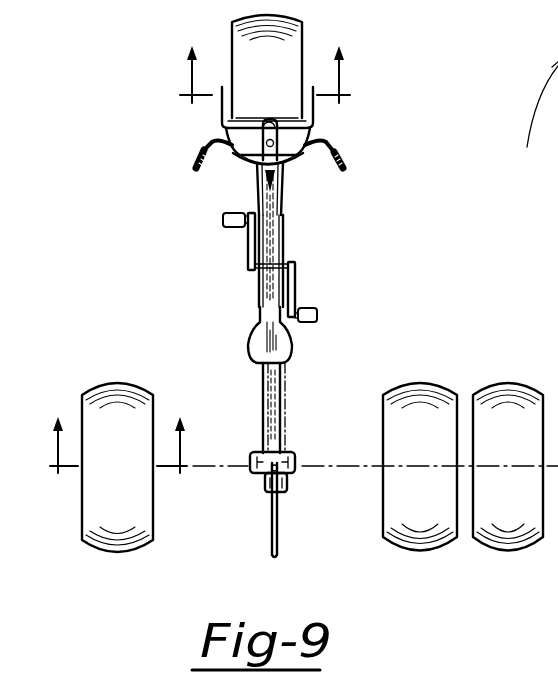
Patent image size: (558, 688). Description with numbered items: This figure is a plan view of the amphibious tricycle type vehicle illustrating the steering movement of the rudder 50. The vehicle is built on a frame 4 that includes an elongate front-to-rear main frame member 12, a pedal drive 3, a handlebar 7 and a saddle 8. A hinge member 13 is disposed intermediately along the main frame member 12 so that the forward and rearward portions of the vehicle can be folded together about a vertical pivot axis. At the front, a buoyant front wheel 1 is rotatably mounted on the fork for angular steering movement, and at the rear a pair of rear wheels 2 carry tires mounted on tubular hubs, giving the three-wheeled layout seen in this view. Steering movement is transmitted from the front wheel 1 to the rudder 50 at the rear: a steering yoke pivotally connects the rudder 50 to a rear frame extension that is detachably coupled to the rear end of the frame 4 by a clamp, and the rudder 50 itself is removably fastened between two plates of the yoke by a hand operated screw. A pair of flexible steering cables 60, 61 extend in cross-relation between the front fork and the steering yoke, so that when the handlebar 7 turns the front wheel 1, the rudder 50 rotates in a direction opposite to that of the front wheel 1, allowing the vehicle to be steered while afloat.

The front wheel 1 is at (365, 0).
The rear wheels 2 is at (110, 533).
The pedal drive 3 is at (248, 248).
The frame 4 is at (272, 400).
The handlebar 7 is at (328, 156).
The saddle 8 is at (291, 347).
The main frame member 12 is at (118, 423).
The hinge member 13 is at (275, 56).
The rudder 50 is at (273, 530).
The steering cable 60 is at (260, 174).
The steering cable 61 is at (281, 177).